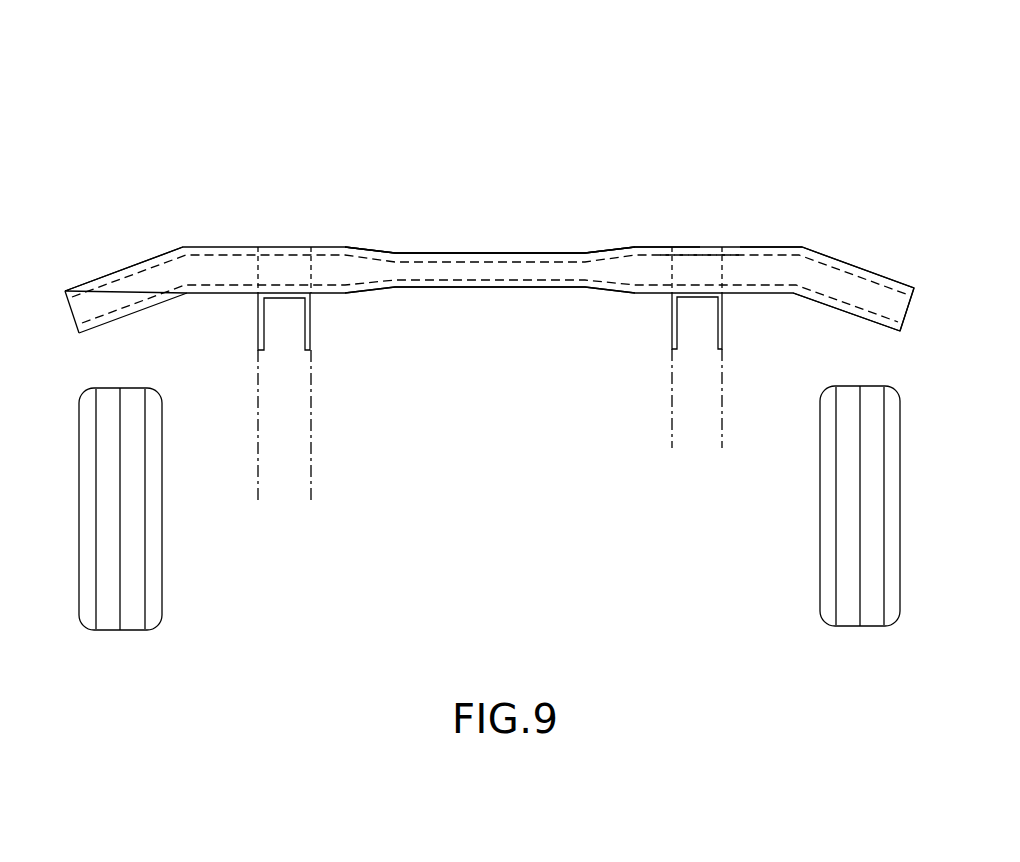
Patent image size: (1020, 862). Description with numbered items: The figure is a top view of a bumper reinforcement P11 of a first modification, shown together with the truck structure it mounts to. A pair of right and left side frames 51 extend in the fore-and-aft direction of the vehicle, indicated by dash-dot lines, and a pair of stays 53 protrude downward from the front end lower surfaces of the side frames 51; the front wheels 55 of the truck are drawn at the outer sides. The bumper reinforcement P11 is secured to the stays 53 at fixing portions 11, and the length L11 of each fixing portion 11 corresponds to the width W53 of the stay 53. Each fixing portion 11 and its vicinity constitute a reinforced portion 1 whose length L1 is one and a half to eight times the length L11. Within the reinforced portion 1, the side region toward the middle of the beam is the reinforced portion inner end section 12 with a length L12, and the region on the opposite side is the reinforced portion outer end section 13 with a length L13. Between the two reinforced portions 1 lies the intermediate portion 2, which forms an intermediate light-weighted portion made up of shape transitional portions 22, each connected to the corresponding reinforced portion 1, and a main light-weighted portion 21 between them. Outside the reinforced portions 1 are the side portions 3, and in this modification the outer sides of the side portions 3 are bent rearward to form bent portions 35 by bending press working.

The reinforced portion 1 is at (800, 103).
The fixing portion 11 is at (697, 253).
The reinforced portion inner end section 12 is at (641, 247).
The reinforced portion outer end section 13 is at (767, 247).
The intermediate portion 2 is at (598, 145).
The main light-weighted portion 21 is at (492, 253).
The shape transitional portion 22 is at (375, 253).
The side portion 3 is at (176, 248).
The bent portion 35 is at (88, 303).
The side frame 51 is at (311, 407).
The stay 53 is at (258, 322).
The front wheel 55 is at (152, 573).
The bumper reinforcement P11 is at (586, 92).
The length of the reinforced portion L1 is at (342, 247).
The length of the fixing portion L11 is at (311, 115).
The length of the reinforced portion inner end section L12 is at (354, 127).
The length of the reinforced portion outer end section L13 is at (258, 115).
The width of the stay W53 is at (299, 501).